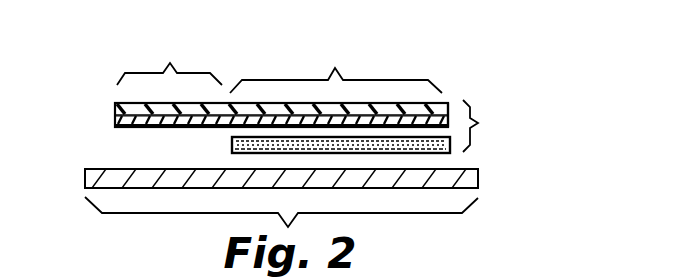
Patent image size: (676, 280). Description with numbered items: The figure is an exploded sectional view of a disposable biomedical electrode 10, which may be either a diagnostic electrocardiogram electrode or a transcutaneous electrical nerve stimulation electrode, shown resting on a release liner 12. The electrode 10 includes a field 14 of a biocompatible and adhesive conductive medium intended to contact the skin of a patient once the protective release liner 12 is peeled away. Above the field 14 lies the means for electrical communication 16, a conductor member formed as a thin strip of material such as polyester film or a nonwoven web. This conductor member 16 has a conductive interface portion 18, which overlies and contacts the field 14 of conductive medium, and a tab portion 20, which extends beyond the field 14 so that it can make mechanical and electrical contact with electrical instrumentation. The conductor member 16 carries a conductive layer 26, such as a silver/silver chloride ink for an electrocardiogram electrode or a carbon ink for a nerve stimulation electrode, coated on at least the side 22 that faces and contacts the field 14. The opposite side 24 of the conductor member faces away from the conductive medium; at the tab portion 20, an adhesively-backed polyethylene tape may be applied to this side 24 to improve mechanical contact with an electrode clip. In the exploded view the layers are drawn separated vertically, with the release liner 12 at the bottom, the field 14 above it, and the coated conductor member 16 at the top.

The electrode 10 is at (277, 99).
The release liner 12 is at (88, 177).
The field of conductive medium 14 is at (231, 145).
The means for electrical communication 16 is at (117, 110).
The conductive interface portion 18 is at (336, 66).
The tab portion 20 is at (169, 60).
The side 22 is at (115, 120).
The side 24 is at (450, 122).
The conductive layer 26 is at (150, 124).